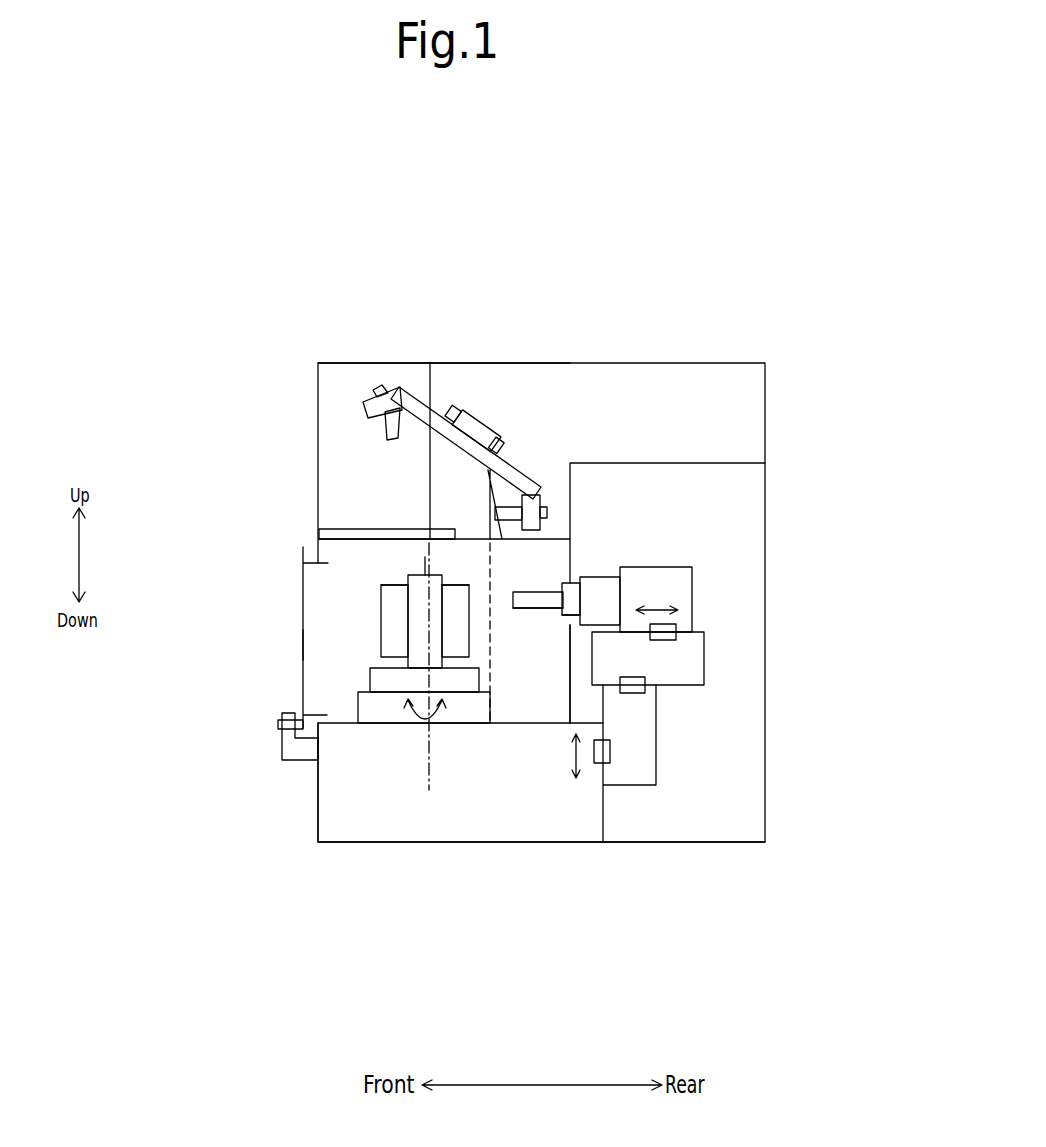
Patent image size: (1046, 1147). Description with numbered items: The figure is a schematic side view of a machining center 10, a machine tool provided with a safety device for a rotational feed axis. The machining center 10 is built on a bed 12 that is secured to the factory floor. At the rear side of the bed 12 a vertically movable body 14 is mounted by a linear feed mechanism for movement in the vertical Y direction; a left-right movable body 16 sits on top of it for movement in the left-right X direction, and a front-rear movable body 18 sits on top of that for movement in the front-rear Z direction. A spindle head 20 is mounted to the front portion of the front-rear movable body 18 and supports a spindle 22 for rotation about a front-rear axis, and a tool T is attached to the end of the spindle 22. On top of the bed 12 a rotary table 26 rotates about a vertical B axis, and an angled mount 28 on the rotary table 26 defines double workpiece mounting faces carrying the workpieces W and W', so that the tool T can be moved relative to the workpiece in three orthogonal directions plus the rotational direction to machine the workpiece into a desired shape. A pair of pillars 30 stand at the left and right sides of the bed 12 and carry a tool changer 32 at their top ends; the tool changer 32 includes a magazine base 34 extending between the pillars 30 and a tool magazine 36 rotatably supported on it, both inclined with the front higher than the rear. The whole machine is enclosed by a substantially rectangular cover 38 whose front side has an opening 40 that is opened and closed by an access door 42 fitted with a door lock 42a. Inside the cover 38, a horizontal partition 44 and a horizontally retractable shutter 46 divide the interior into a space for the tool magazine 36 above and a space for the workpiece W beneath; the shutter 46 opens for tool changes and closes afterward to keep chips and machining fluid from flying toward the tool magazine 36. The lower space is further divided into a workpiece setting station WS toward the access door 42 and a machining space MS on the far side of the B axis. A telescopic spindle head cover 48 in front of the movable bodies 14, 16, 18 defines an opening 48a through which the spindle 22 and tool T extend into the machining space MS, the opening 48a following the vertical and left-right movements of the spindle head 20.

The machining center 10 is at (666, 284).
The bed 12 is at (335, 798).
The vertically movable body 14 is at (643, 762).
The left-right movable body 16 is at (688, 666).
The front-rear movable body 18 is at (682, 592).
The spindle head 20 is at (605, 585).
The spindle 22 is at (572, 597).
The rotary table 26 is at (367, 708).
The angled mount 28 is at (385, 682).
The pillars 30 is at (430, 460).
The tool changer 32 is at (469, 354).
The magazine base 34 is at (460, 416).
The tool magazine 36 is at (396, 385).
The cover 38 is at (702, 363).
The opening 40 is at (311, 566).
The access door 42 is at (303, 645).
The door lock 42a is at (266, 741).
The horizontal partition 44 is at (387, 533).
The shutter 46 is at (490, 522).
The spindle head cover 48 is at (570, 620).
The opening 48a is at (560, 653).
The tool T is at (543, 600).
The workpiece W is at (455, 748).
The workpiece W' is at (360, 748).
The workpiece setting station WS is at (332, 667).
The machining space MS is at (508, 627).
The B-axis B is at (424, 727).
The X-axis direction X is at (629, 663).
The Y-axis direction Y is at (565, 756).
The Z-axis direction Z is at (657, 597).